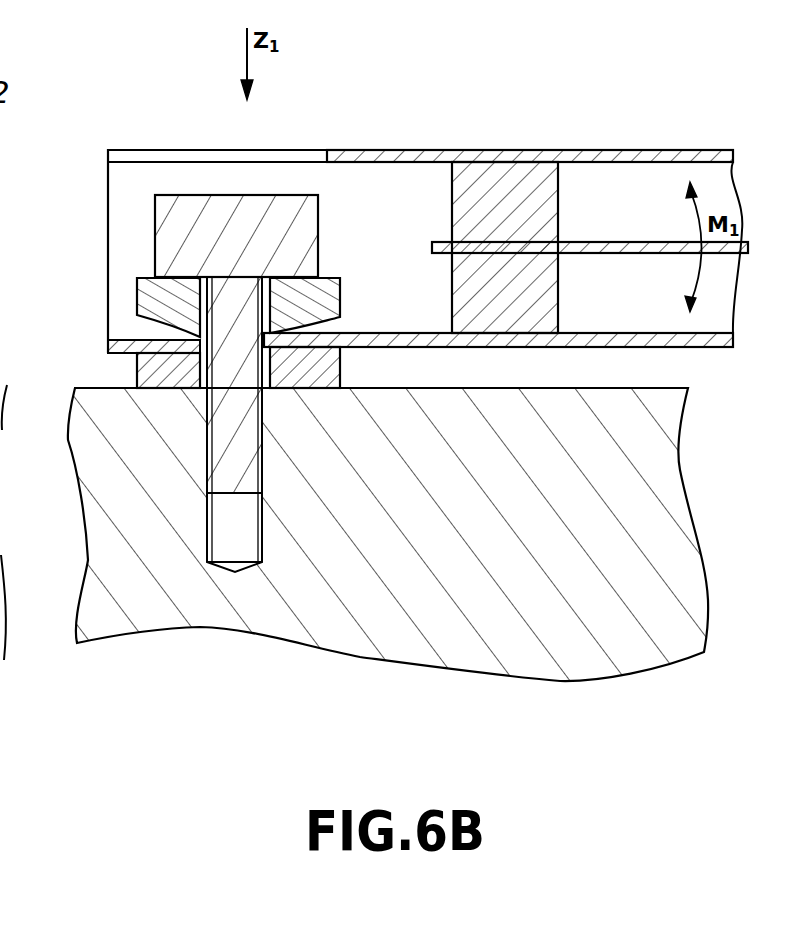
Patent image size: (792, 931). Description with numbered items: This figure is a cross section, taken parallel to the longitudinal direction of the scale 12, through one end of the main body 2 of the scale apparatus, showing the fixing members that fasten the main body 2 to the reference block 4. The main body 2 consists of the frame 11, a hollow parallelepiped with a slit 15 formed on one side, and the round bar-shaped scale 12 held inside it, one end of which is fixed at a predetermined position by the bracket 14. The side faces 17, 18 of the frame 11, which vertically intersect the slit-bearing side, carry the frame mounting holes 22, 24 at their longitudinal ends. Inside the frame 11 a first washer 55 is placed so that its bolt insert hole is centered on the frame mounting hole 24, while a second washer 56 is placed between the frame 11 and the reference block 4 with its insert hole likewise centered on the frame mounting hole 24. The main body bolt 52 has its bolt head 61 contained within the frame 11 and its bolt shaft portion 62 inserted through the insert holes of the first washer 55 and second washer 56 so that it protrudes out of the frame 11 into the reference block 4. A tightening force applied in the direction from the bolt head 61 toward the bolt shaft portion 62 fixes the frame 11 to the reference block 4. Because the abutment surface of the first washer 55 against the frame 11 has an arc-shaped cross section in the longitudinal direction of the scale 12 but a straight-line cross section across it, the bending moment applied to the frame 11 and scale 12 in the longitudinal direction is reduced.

The main body 2 is at (520, 114).
The reference block 4 is at (425, 633).
The frame 11 is at (607, 150).
The scale 12 is at (622, 242).
The bracket 14 is at (548, 172).
The slit 15 is at (0, 217).
The side face 17 is at (642, 149).
The side face 18 is at (675, 348).
The frame mounting hole 22 is at (185, 150).
The frame mounting hole 24 is at (200, 353).
The main body bolt 52 is at (266, 196).
The first washer 55 is at (337, 277).
The second washer 56 is at (345, 362).
The bolt head 61 is at (235, 195).
The bolt shaft portion 62 is at (0, 418).